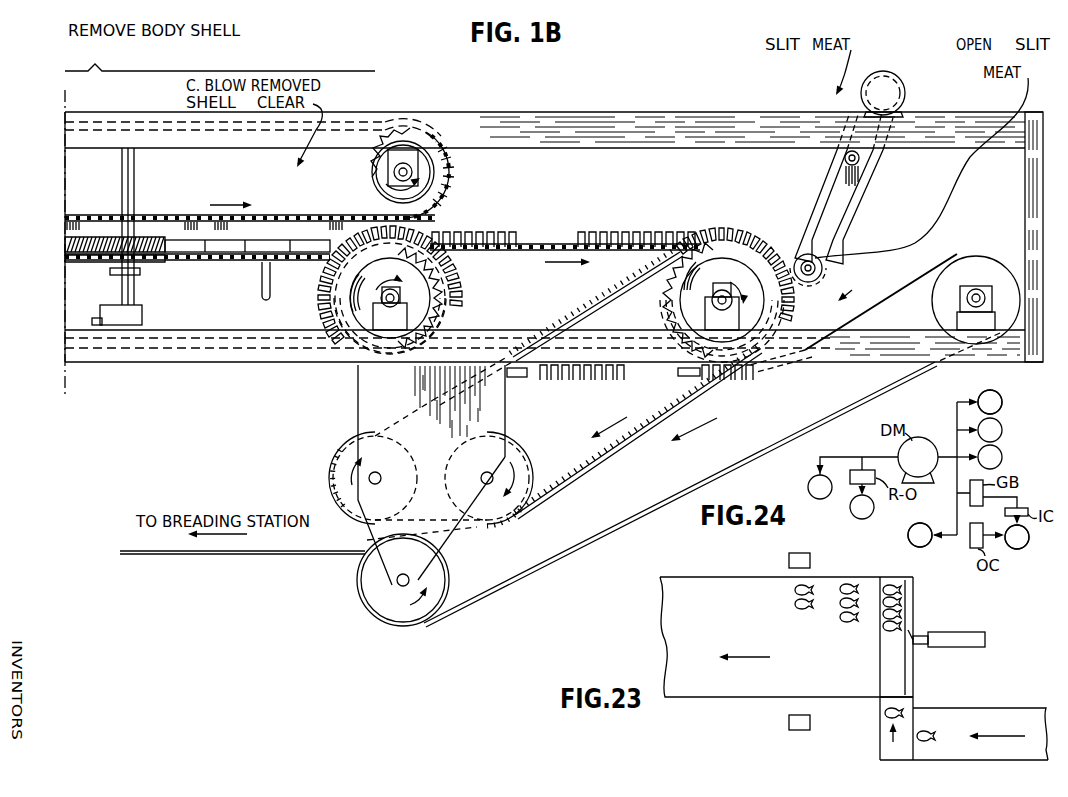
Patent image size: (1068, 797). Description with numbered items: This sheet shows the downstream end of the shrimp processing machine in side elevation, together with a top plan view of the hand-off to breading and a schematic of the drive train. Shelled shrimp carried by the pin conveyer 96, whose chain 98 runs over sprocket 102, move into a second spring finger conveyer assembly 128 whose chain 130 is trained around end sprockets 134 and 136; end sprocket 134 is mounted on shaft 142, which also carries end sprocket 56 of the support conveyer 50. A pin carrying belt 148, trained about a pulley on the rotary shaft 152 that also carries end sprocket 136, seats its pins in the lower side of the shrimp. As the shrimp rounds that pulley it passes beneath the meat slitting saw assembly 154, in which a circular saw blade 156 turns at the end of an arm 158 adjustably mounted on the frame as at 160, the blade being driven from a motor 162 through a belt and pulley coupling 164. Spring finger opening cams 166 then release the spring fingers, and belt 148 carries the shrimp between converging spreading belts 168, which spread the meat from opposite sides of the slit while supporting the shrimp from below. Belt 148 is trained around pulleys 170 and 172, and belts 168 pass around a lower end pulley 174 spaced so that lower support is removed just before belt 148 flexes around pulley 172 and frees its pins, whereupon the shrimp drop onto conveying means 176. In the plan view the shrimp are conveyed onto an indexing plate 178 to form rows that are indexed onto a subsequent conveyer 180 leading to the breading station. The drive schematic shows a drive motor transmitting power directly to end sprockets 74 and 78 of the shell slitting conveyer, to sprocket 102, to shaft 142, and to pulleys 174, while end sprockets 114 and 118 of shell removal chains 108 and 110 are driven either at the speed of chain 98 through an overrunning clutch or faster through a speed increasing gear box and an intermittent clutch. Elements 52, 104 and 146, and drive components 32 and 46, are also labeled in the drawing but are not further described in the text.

In FIG. 1B, the support conveyer 50 is at (241, 272).
In FIG. 1B, the guide rail and post 52 is at (284, 262).
In FIG. 1B, the end sprocket 56 is at (445, 295).
In FIG. 1B, the pin conveyer 96 is at (166, 212).
In FIG. 1B, the chain 98 is at (328, 217).
In FIG. 1B, the sprocket 102 is at (359, 178).
In FIG. 24, the sprocket 102 is at (1002, 433).
In FIG. 1B, the brush 104 is at (463, 168).
In FIG. 1B, the shell removal chain 108 is at (84, 265).
In FIG. 24, the shell removal chain 108 is at (910, 542).
In FIG. 1B, the end sprocket 114 is at (145, 268).
In FIG. 24, the end sprocket 114 is at (1026, 546).
In FIG. 1B, the second spring finger conveyer assembly 128 is at (560, 231).
In FIG. 1B, the chain 130 is at (690, 238).
In FIG. 1B, the end sprocket 134 is at (440, 316).
In FIG. 1B, the end sprocket 136 is at (669, 312).
In FIG. 1B, the shaft 142 is at (441, 283).
In FIG. 24, the shaft 142 is at (1002, 460).
In FIG. 1B, the toothed wheel 146 is at (318, 310).
In FIG. 1B, the belt 148 is at (562, 470).
In FIG. 1B, the rotary shaft 152 is at (787, 316).
In FIG. 1B, the meat slitting saw assembly 154 is at (853, 224).
In FIG. 1B, the circular saw blade 156 is at (829, 267).
In FIG. 1B, the arm 158 is at (833, 198).
In FIG. 1B, the adjustable mounting 160 is at (846, 158).
In FIG. 1B, the motor 162 is at (903, 82).
In FIG. 1B, the belt and pulley coupling 164 is at (876, 172).
In FIG. 1B, the spring finger opening cams 166 is at (682, 376).
In FIG. 1B, the spreading belts 168 is at (742, 390).
In FIG. 1B, the pulley 170 is at (513, 448).
In FIG. 1B, the pulley 172 is at (334, 477).
In FIG. 1B, the lower end pulley 174 is at (395, 610).
In FIG. 1B, the conveying means 176 is at (258, 555).
In FIG. 23, the conveying means 176 is at (990, 712).
In FIG. 23, the indexing plate 178 is at (913, 633).
In FIG. 23, the subsequent conveyer 180 is at (830, 690).
In FIG. 24, the motor 32 is at (812, 492).
In FIG. 24, the drive 46 is at (852, 515).
In FIG. 24, the end sprocket 74 is at (1002, 405).
In FIG. 24, the end sprocket 78 is at (1008, 404).
In FIG. 24, the shell removal chain 110 is at (909, 543).
In FIG. 24, the end sprocket 118 is at (1030, 552).